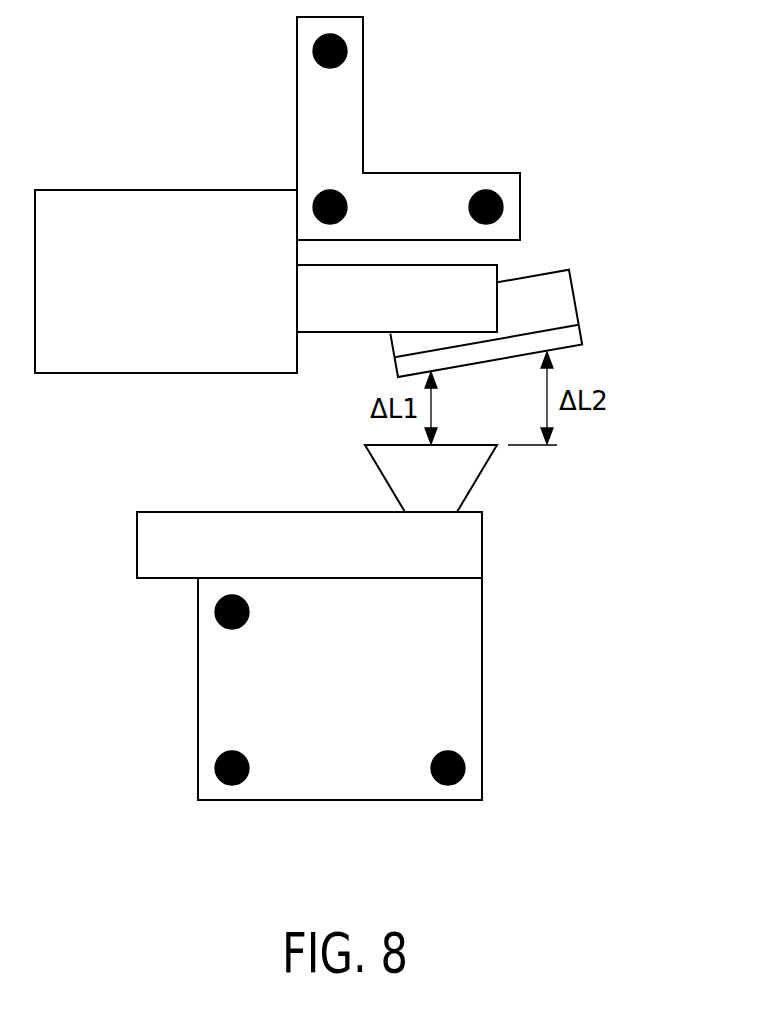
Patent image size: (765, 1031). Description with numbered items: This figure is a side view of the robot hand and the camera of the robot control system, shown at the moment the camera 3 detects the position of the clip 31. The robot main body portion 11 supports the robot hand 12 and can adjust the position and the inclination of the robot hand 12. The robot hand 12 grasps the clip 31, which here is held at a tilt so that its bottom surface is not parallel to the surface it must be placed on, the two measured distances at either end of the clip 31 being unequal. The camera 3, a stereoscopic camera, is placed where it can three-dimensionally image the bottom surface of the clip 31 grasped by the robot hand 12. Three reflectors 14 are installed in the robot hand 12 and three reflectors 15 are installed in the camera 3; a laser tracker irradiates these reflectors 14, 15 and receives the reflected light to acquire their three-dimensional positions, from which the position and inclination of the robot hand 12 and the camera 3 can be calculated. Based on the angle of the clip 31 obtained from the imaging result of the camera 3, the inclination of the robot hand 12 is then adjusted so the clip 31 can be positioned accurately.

The camera 3 is at (483, 650).
The robot main body portion 11 is at (165, 374).
The robot hand 12 is at (323, 333).
The reflector 14 is at (313, 48).
The reflector 15 is at (215, 612).
The clip 31 is at (579, 298).